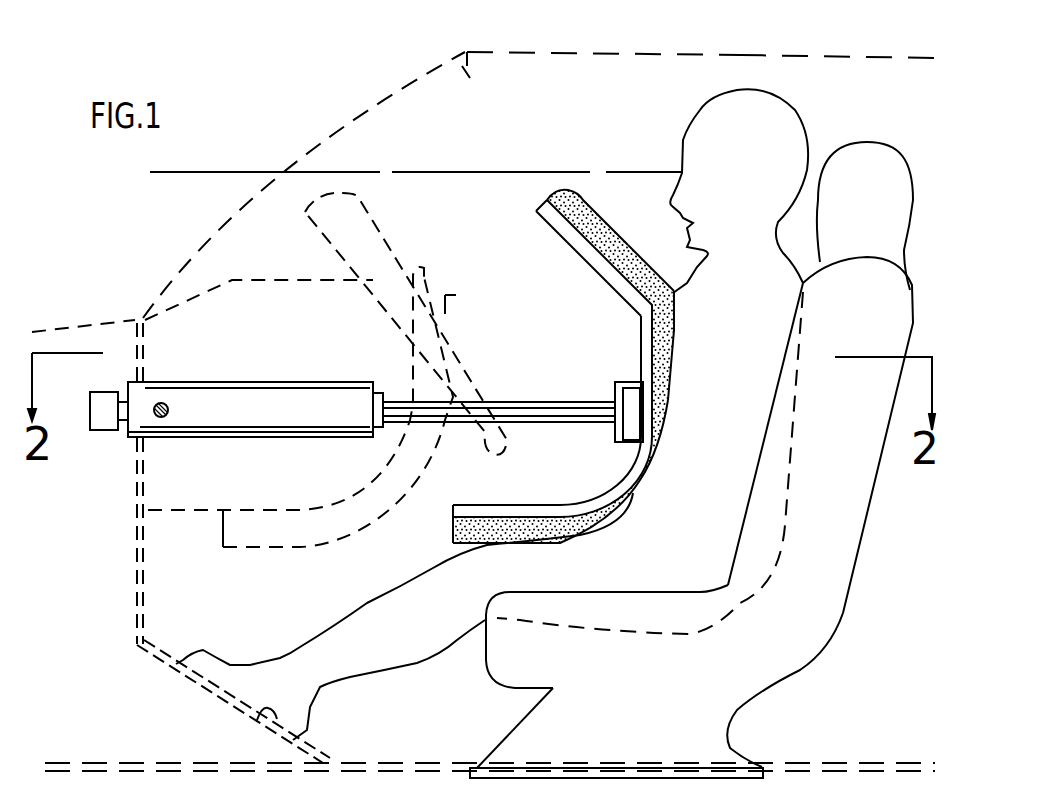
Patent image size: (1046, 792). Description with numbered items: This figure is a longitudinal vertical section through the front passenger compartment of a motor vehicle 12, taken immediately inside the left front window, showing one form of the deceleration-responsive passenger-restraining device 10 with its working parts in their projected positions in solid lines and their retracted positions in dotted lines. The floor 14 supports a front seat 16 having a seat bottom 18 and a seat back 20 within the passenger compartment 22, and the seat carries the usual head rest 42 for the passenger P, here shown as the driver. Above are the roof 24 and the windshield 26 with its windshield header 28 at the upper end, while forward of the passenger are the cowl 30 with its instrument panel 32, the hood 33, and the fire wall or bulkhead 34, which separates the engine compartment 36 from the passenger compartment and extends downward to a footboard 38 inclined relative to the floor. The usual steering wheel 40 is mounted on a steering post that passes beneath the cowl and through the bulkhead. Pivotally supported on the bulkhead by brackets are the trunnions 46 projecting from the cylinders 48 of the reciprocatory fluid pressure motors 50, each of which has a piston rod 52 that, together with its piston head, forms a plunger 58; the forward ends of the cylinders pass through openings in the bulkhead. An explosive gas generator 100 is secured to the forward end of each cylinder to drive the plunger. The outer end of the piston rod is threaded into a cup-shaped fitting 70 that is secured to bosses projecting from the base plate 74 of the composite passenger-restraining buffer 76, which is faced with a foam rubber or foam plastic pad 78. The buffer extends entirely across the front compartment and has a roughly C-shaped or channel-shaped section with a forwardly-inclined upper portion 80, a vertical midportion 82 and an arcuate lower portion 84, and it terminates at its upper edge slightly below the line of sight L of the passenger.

The deceleration-responsive passenger-restraining device 10 is at (589, 341).
The motor vehicle 12 is at (138, 315).
The floor 14 is at (148, 761).
The front seat 16 is at (702, 450).
The seat bottom 18 is at (646, 592).
The seat back 20 is at (848, 487).
The passenger compartment 22 is at (855, 77).
The roof 24 is at (608, 54).
The windshield 26 is at (322, 146).
The windshield header 28 is at (484, 77).
The cowl 30 is at (241, 279).
The instrument panel 32 is at (407, 317).
The hood 33 is at (92, 320).
The fire wall or bulkhead 34 is at (136, 508).
The engine compartment 36 is at (90, 601).
The footboard 38 is at (160, 660).
The steering wheel 40 is at (334, 370).
The head rest 42 is at (900, 172).
The trunnions 46 is at (168, 410).
The cylinders 48 is at (385, 408).
The reciprocatory fluid pressure motors 50 is at (280, 380).
The piston rods 52 is at (537, 385).
The plungers 58 is at (570, 424).
The cup-shaped fitting 70 is at (613, 380).
The base plate 74 is at (558, 231).
The composite passenger-restraining buffer 76 is at (455, 295).
The foam rubber or foam plastic pad 78 is at (655, 258).
The forwardly-inclined upper portion 80 is at (621, 205).
The vertical midportion 82 is at (676, 355).
The arcuate lower portion 84 is at (603, 466).
The explosive gas generator 100 is at (90, 388).
The passenger P is at (815, 135).
The line of sight L is at (460, 173).